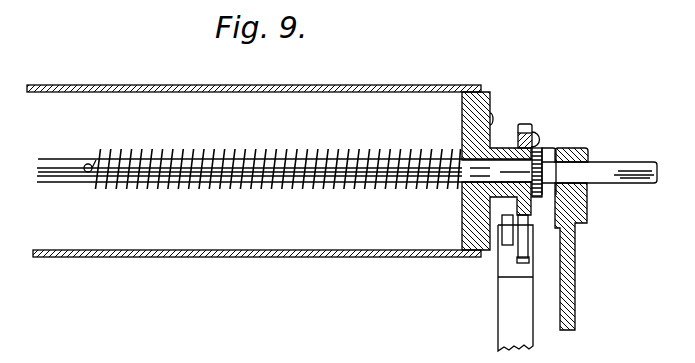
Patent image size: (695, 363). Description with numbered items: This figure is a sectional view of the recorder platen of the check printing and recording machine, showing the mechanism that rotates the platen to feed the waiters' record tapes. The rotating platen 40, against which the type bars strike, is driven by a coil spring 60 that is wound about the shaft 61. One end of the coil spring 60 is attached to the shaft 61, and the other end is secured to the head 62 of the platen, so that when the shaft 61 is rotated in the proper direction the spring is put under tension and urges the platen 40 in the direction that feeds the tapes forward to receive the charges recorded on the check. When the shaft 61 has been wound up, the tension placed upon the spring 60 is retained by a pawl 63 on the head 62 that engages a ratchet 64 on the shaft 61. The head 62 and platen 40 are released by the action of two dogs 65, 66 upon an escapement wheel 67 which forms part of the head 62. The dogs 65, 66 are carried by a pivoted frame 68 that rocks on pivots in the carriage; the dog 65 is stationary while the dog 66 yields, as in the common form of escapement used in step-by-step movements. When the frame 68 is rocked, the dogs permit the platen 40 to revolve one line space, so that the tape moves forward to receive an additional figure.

The platen 40 is at (132, 86).
The coil spring 60 is at (300, 152).
The shaft 61 is at (618, 163).
The head 62 is at (471, 108).
The pawl 63 is at (539, 136).
The ratchet 64 is at (541, 152).
The dog 65 is at (508, 238).
The dog 66 is at (523, 242).
The escapement wheel 67 is at (524, 128).
The pivoted frame 68 is at (499, 328).